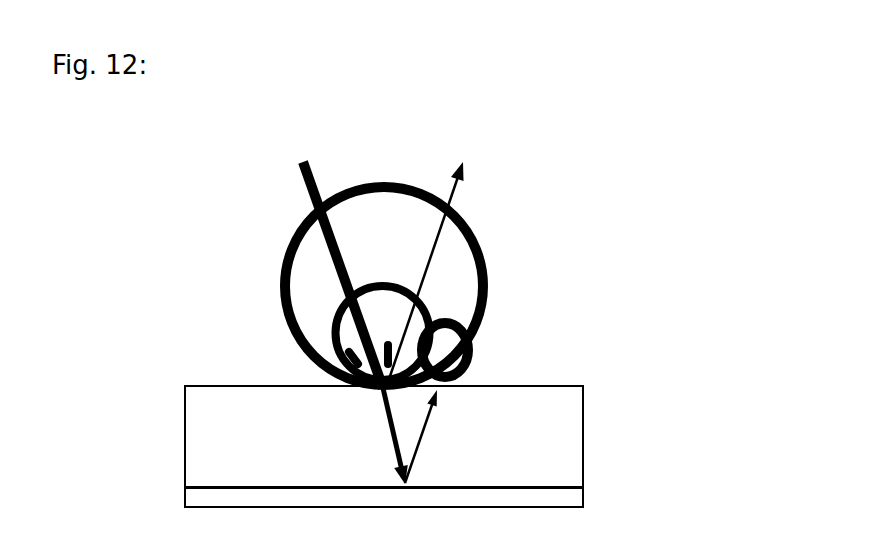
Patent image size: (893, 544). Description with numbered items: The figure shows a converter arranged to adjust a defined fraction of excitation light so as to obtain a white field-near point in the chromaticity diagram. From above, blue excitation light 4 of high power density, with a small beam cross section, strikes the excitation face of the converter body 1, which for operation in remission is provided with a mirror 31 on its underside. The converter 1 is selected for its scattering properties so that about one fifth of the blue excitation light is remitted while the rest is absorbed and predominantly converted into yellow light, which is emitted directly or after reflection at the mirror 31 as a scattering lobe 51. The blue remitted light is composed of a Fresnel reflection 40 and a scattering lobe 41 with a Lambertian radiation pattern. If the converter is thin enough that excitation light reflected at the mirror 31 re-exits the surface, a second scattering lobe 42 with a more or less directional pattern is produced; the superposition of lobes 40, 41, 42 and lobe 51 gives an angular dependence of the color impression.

The converter body 1 is at (213, 440).
The mirror 31 is at (215, 498).
The blue excitation light 4 is at (301, 160).
The Fresnel reflection 40 is at (460, 142).
The scattering lobe 41 is at (333, 317).
The second scattering lobe 42 is at (476, 359).
The scattering lobe 51 is at (488, 262).